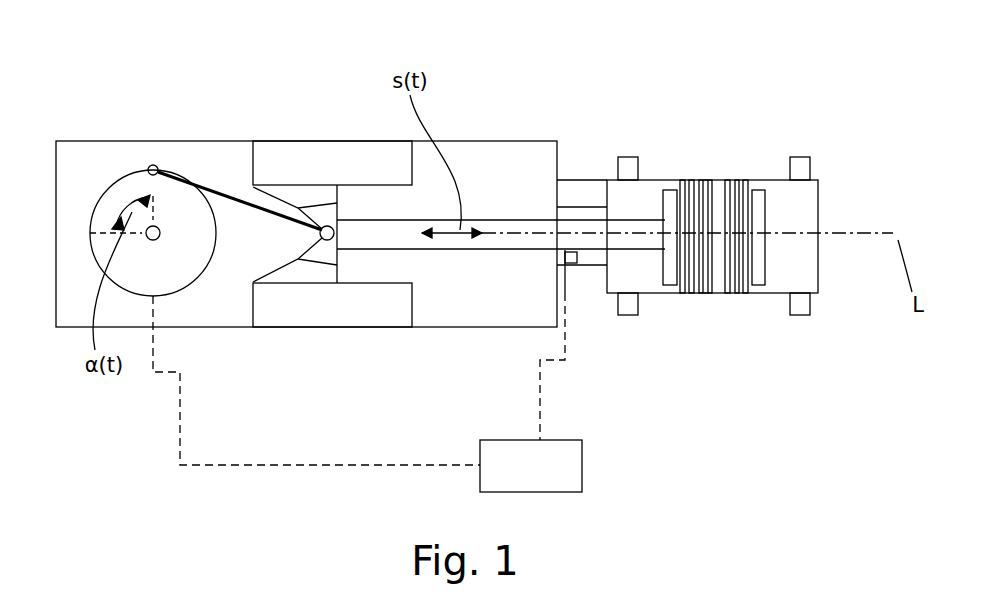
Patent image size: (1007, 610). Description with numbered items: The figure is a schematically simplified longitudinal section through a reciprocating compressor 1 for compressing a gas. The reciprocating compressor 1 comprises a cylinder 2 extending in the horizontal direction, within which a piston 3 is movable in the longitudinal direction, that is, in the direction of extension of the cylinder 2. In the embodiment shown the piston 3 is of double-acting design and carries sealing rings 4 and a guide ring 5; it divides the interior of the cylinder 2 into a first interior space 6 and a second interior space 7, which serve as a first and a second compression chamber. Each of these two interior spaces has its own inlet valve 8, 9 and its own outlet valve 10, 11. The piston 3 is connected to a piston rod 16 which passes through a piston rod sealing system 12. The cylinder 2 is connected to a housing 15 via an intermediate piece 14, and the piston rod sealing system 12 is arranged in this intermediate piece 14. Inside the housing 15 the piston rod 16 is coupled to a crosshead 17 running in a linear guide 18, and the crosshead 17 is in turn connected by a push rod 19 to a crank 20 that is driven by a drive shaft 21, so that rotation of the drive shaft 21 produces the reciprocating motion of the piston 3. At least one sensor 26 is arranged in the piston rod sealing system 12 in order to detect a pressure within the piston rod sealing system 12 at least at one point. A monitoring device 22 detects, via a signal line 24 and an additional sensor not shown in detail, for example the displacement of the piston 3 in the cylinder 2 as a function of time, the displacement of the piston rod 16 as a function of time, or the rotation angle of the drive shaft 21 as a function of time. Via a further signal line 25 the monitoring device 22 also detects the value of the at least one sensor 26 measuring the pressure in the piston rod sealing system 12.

The reciprocating compressor 1 is at (694, 77).
The cylinder 2 is at (650, 295).
The piston 3 is at (760, 247).
The sealing rings 4 is at (680, 294).
The guide ring 5 is at (713, 294).
The first interior space 6 is at (657, 203).
The second interior space 7 is at (802, 192).
The inlet valve 8 is at (627, 165).
The inlet valve 9 is at (805, 165).
The outlet valve 10 is at (627, 315).
The outlet valve 11 is at (800, 315).
The piston rod sealing system 12 is at (595, 212).
The intermediate piece 14 is at (575, 187).
The housing 15 is at (500, 140).
The piston rod 16 is at (503, 235).
The crosshead 17 is at (322, 208).
The linear guide 18 is at (385, 302).
The push rod 19 is at (223, 192).
The crank 20 is at (133, 187).
The drive shaft 21 is at (161, 236).
The monitoring device 22 is at (531, 466).
The signal line 24 is at (307, 466).
The signal line 25 is at (540, 398).
The sensor 26 is at (582, 262).